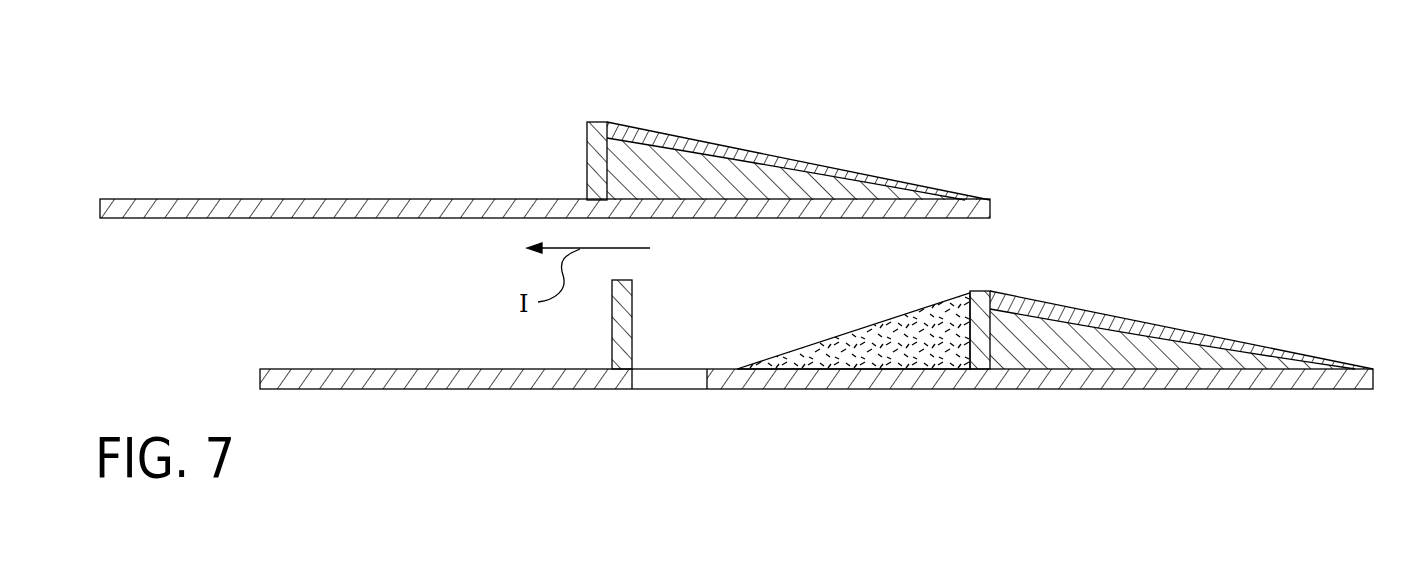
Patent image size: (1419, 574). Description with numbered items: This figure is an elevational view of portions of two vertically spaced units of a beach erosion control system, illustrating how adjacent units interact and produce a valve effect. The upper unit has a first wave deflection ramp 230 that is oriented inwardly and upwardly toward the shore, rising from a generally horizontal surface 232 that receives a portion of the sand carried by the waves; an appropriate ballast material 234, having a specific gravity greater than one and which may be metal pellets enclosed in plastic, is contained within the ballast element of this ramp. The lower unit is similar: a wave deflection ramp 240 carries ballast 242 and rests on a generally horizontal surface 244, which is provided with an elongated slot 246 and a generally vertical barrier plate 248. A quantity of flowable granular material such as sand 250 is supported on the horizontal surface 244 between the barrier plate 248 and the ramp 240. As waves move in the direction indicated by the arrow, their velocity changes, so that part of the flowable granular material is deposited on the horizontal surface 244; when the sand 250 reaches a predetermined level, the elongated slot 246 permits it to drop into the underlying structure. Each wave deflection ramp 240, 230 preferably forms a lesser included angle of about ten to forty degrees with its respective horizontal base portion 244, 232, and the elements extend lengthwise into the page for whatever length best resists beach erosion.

The first wave deflection ramp 230 is at (685, 112).
The generally horizontal surface 232 is at (587, 170).
The ballast material 234 is at (777, 184).
The wave deflection ramp 240 is at (1124, 320).
The ballast 242 is at (1183, 356).
The generally horizontal surface 244 is at (897, 389).
The elongated slot 246 is at (665, 389).
The generally vertical barrier plate 248 is at (628, 335).
The sand 250 is at (863, 334).